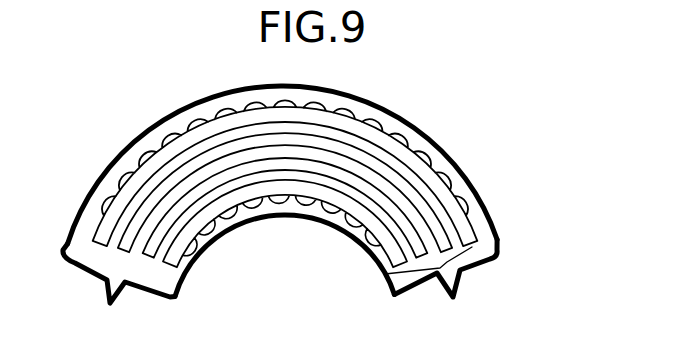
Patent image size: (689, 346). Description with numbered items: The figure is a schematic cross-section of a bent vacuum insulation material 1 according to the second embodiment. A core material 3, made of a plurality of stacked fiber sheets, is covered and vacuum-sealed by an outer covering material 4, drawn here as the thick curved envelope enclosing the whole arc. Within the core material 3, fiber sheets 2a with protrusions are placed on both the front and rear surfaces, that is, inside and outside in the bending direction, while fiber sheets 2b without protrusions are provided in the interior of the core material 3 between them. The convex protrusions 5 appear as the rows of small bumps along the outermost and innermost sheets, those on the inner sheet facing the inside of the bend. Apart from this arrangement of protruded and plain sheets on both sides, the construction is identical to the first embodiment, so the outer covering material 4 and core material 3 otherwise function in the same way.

The vacuum insulation material 1 is at (82, 88).
The fiber sheet with protrusions 2a is at (203, 132).
The fiber sheet without protrusions 2b is at (150, 198).
The core material 3 is at (455, 270).
The outer covering material 4 is at (478, 192).
The convex protrusions 5 is at (372, 258).